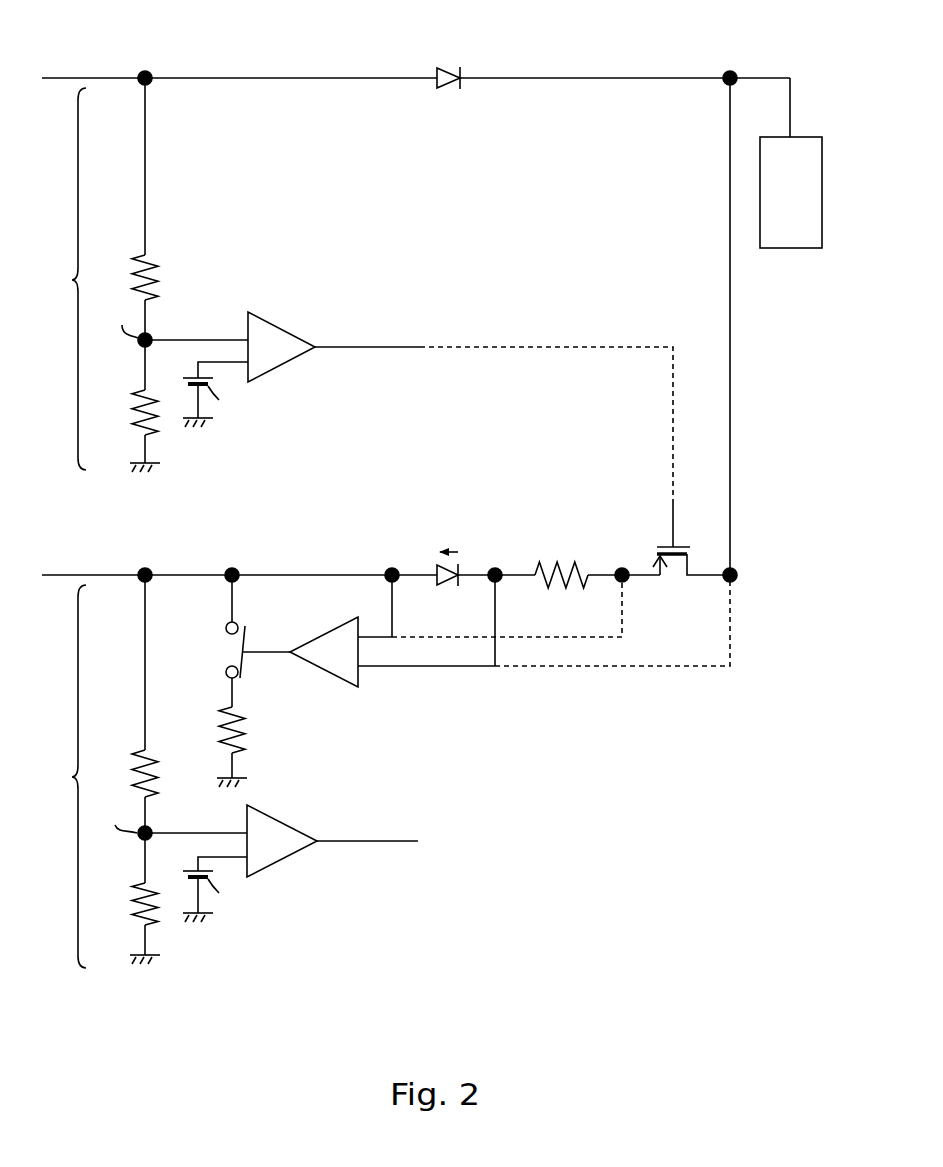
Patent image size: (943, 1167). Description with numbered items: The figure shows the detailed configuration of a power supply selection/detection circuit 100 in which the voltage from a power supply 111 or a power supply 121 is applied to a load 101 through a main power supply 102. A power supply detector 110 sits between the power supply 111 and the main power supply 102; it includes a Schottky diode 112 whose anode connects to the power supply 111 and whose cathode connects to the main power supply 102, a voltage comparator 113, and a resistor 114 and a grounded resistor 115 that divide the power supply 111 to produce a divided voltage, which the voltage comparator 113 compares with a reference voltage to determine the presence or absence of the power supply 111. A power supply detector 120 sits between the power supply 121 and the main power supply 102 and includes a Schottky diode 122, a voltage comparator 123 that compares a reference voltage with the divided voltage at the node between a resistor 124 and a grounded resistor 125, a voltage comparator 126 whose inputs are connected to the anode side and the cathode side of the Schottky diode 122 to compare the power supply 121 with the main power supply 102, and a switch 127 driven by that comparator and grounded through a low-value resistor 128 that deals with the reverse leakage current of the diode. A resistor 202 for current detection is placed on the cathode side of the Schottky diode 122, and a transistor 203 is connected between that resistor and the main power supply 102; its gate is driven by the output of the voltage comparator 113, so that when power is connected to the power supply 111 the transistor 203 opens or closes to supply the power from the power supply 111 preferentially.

The power supply selection/detection circuit 100 is at (706, 32).
The load 101 is at (780, 249).
The main power supply 102 is at (760, 77).
The power supply detector 110 is at (230, 275).
The power supply 111 is at (63, 75).
The Schottky diode 112 is at (436, 71).
The voltage comparator 113 is at (268, 373).
The resistor 114 is at (132, 283).
The resistor 115 is at (132, 410).
The power supply detector 120 is at (385, 771).
The power supply 121 is at (63, 572).
The Schottky diode 122 is at (437, 570).
The voltage comparator 123 is at (268, 866).
The resistor 124 is at (132, 778).
The resistor 125 is at (132, 910).
The voltage comparator 126 is at (345, 686).
The switch 127 is at (247, 627).
The resistor 128 is at (220, 733).
The resistor 202 is at (557, 563).
The transistor 203 is at (675, 580).